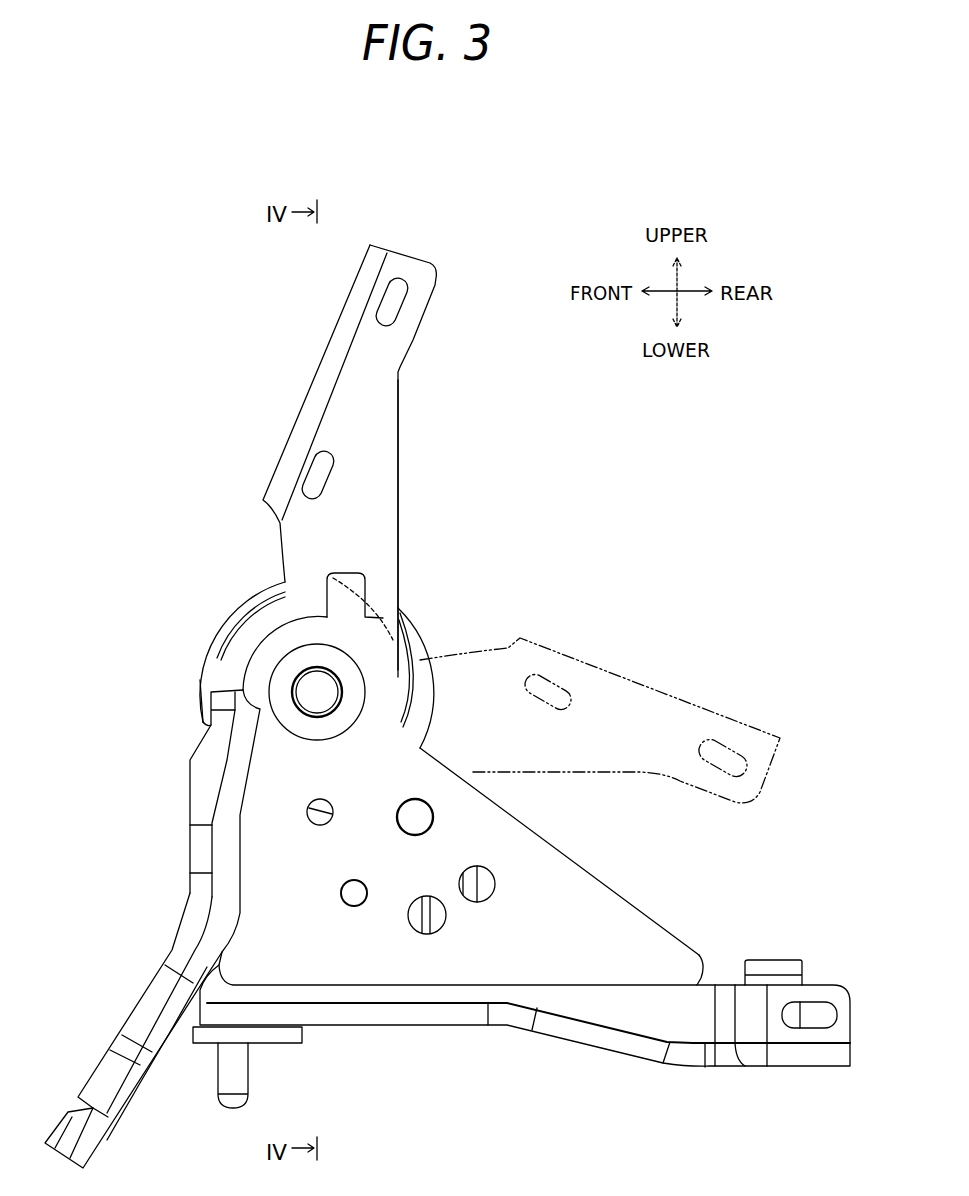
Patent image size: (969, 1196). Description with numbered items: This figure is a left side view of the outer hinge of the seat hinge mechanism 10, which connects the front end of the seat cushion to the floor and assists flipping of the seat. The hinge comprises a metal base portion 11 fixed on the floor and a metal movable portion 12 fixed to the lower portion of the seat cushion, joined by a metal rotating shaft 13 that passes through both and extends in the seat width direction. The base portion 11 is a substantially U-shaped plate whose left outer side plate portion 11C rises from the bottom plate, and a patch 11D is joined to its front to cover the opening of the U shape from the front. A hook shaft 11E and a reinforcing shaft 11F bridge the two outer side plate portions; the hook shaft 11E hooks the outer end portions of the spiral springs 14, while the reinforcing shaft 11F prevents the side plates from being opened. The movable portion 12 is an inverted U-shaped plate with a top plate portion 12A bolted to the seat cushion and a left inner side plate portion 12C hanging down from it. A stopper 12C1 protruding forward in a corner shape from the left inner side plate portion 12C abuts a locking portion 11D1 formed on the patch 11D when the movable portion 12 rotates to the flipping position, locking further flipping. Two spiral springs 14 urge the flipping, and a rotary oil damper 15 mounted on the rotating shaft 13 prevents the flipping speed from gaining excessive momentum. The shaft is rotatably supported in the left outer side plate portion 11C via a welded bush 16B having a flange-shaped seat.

The seat hinge mechanism 10 is at (152, 296).
The base portion 11 is at (447, 929).
The left outer side plate portion 11C is at (548, 884).
The patch 11D is at (200, 810).
The locking portion 11D1 is at (222, 700).
The hook shaft 11E is at (354, 893).
The reinforcing shaft 11F is at (415, 817).
The movable portion 12 is at (333, 461).
The top plate portion 12A is at (328, 345).
The left inner side plate portion 12C is at (375, 488).
The stopper 12C1 is at (210, 681).
The rotating shaft 13 is at (317, 692).
The spiral spring 14 is at (250, 630).
The oil damper 15 is at (257, 602).
The bush 16B is at (323, 655).